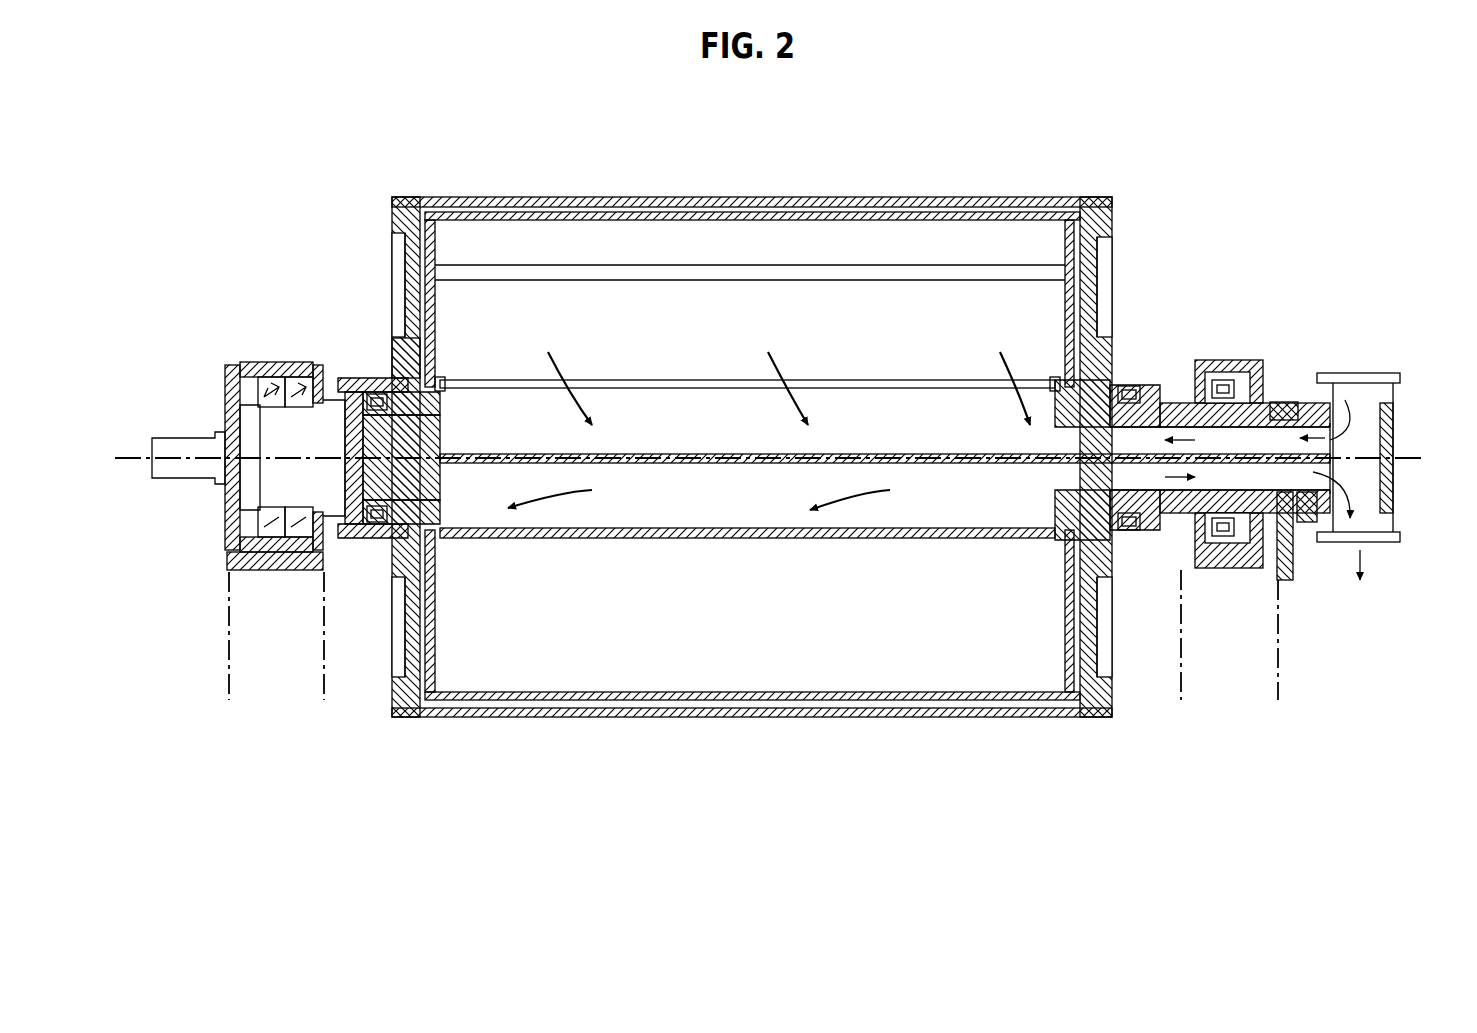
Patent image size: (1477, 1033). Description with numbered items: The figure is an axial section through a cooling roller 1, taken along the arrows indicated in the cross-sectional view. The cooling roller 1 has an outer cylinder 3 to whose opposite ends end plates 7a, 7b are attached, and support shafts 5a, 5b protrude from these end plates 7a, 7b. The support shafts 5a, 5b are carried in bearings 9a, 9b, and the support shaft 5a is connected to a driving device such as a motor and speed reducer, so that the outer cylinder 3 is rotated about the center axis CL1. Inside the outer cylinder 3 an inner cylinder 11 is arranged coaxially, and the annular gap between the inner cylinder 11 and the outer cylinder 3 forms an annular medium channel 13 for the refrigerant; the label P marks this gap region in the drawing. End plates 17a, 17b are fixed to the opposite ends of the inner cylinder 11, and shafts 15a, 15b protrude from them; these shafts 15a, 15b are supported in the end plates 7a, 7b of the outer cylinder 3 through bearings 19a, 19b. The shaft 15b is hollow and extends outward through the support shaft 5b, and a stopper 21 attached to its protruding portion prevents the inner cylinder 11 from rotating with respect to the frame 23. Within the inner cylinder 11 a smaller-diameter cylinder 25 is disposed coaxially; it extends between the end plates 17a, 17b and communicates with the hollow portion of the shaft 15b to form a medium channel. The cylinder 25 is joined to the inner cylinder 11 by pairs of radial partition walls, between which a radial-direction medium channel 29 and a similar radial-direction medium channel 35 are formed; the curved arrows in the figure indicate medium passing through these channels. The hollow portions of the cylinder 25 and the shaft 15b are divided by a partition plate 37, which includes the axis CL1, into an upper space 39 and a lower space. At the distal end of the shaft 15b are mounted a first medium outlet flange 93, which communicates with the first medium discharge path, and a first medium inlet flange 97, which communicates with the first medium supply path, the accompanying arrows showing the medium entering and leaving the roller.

The cooling roller 1 is at (1044, 118).
The outer cylinder 3 is at (752, 461).
The support shaft 5a is at (262, 430).
The support shaft 5b is at (1185, 403).
The end plate 7a is at (392, 250).
The end plate 7b is at (1112, 258).
The bearing 9a is at (272, 365).
The bearing 9b is at (1238, 360).
The inner cylinder 11 is at (585, 700).
The annular medium channel 13 is at (860, 700).
The shaft 15a is at (432, 440).
The shaft 15b is at (1165, 530).
The end plate 17a is at (436, 320).
The end plate 17b is at (1065, 320).
The bearing 19a is at (373, 538).
The bearing 19b is at (1130, 386).
The stopper 21 is at (1300, 565).
The frame 23 is at (1290, 664).
The cylinder 25 is at (805, 538).
The radial-direction medium channel 29 is at (858, 358).
The radial-direction medium channel 35 is at (918, 572).
The partition plate 37 is at (978, 454).
The upper space 39 is at (728, 410).
The first medium outlet flange 93 is at (1372, 373).
The first medium inlet flange 97 is at (1395, 542).
The passage P is at (722, 708).
The center axis CL1 is at (1400, 458).